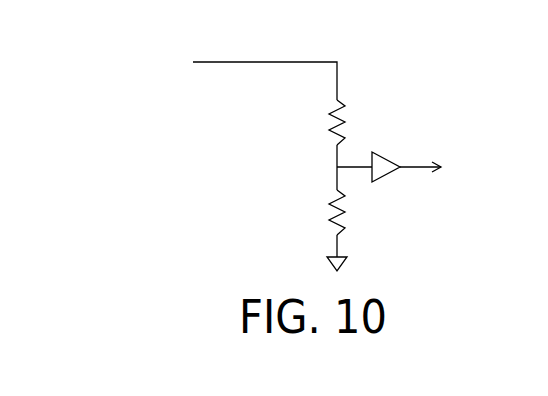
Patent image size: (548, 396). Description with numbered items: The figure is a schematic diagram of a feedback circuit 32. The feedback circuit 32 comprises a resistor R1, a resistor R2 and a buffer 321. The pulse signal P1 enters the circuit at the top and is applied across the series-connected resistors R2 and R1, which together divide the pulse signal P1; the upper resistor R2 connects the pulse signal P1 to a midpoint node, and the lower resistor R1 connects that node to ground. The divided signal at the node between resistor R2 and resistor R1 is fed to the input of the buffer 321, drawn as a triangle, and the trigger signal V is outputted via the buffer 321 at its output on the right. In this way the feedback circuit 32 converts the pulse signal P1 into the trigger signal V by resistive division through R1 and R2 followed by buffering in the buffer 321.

The feedback circuit 32 is at (73, 44).
The buffer 321 is at (392, 158).
The pulse signal P1 is at (248, 74).
The resistor R1 is at (314, 212).
The resistor R2 is at (314, 122).
The trigger signal V is at (434, 168).